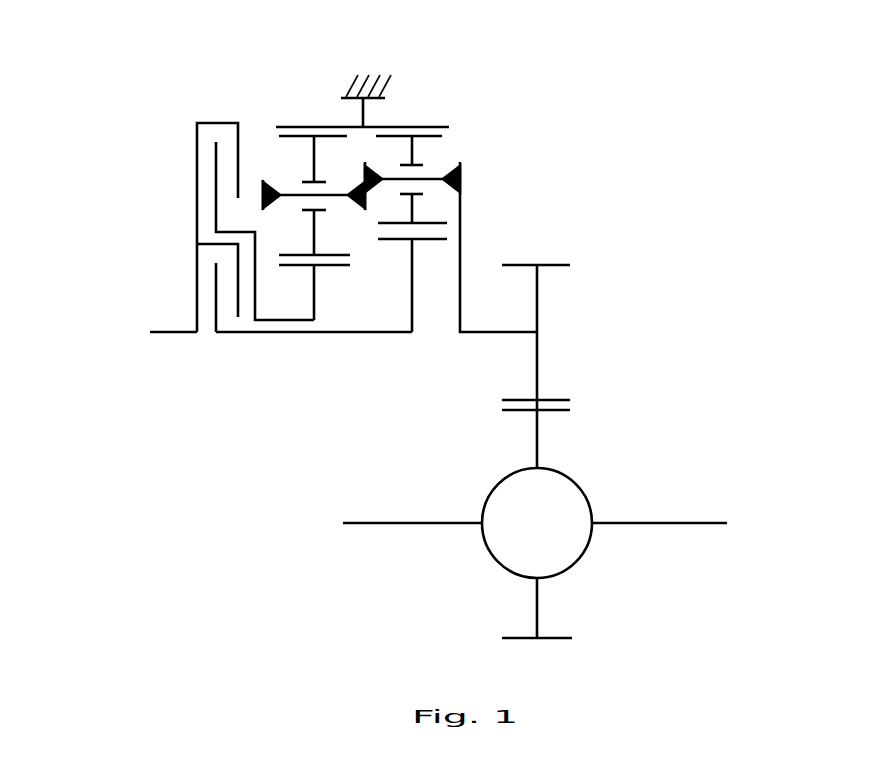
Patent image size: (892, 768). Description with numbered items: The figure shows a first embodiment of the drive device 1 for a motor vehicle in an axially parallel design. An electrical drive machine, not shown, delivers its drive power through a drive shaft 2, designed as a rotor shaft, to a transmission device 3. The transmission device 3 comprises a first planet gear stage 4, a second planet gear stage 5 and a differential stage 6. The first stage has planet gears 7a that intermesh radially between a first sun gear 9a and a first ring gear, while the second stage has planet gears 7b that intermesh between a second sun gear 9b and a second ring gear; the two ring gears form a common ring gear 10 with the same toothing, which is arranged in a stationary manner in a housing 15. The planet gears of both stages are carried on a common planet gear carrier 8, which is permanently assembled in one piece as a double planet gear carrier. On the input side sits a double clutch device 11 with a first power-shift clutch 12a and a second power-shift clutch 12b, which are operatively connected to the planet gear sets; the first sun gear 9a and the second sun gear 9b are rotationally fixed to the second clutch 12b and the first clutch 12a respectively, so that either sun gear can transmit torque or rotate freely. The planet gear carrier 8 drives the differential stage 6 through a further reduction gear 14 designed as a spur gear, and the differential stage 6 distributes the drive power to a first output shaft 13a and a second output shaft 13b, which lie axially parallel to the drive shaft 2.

The drive device 1 is at (112, 42).
The drive shaft 2 is at (173, 335).
The transmission device 3 is at (533, 130).
The first planet gear stage 4 is at (350, 66).
The second planet gear stage 5 is at (447, 66).
The differential stage 6 is at (532, 523).
The planet gears of the first planet set 7a is at (312, 148).
The planet gears of the second planet set 7b is at (416, 157).
The common planet gear carrier 8 is at (428, 182).
The first sun gear 9a is at (316, 296).
The second sun gear 9b is at (416, 298).
The common ring gear 10 is at (310, 123).
The double clutch device 11 is at (182, 138).
The first power-shift clutch 12a is at (212, 298).
The second power-shift clutch 12b is at (205, 179).
The first output shaft 13a is at (418, 522).
The second output shaft 13b is at (653, 522).
The further reduction gear 14 is at (538, 308).
The housing 15 is at (387, 92).